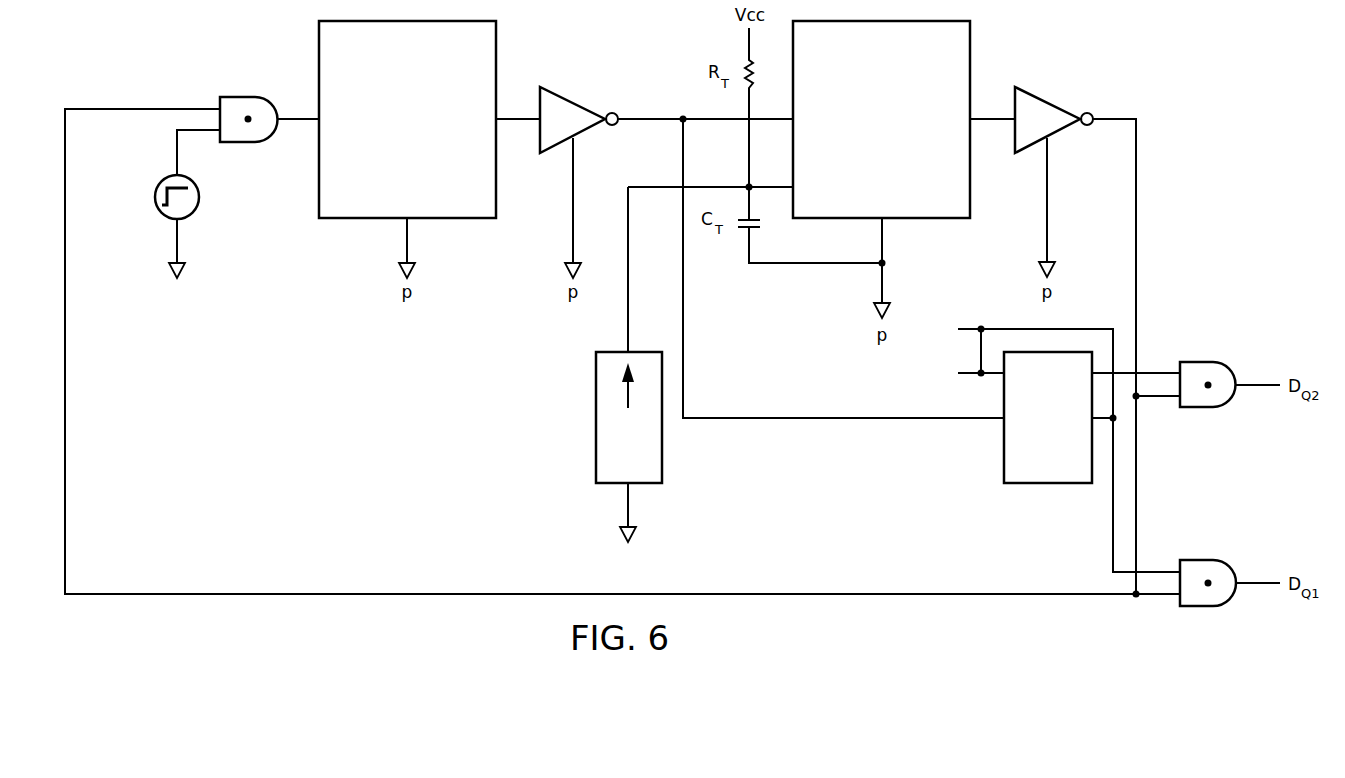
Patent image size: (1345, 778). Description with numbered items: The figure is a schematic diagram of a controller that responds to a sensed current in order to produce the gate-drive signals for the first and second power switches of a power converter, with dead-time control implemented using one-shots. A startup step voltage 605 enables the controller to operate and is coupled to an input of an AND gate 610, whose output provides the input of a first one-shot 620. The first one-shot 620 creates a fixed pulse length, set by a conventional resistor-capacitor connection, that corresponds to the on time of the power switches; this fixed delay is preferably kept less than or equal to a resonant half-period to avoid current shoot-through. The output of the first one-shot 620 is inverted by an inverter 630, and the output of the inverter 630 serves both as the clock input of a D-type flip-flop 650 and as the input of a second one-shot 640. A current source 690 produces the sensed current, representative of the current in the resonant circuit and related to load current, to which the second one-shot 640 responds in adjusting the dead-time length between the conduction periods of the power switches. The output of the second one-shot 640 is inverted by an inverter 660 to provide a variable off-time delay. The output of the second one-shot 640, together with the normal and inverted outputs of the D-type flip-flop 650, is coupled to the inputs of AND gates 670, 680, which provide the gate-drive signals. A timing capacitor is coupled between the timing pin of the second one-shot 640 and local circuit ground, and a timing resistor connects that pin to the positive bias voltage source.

The startup step voltage 605 is at (155, 196).
The AND gate 610 is at (240, 97).
The first one-shot 620 is at (388, 165).
The inverter 630 is at (588, 109).
The second one-shot 640 is at (863, 165).
The D-type flip-flop 650 is at (1047, 484).
The inverter 660 is at (1063, 106).
The AND gate 670 is at (1208, 408).
The AND gate 680 is at (1208, 607).
The current source 690 is at (596, 418).